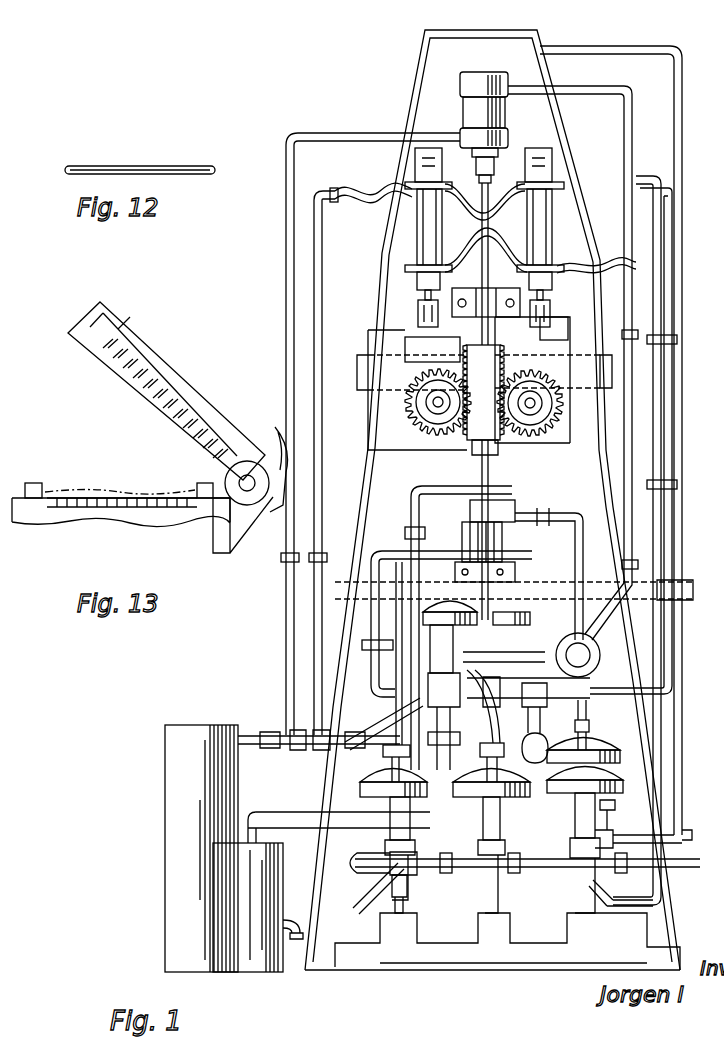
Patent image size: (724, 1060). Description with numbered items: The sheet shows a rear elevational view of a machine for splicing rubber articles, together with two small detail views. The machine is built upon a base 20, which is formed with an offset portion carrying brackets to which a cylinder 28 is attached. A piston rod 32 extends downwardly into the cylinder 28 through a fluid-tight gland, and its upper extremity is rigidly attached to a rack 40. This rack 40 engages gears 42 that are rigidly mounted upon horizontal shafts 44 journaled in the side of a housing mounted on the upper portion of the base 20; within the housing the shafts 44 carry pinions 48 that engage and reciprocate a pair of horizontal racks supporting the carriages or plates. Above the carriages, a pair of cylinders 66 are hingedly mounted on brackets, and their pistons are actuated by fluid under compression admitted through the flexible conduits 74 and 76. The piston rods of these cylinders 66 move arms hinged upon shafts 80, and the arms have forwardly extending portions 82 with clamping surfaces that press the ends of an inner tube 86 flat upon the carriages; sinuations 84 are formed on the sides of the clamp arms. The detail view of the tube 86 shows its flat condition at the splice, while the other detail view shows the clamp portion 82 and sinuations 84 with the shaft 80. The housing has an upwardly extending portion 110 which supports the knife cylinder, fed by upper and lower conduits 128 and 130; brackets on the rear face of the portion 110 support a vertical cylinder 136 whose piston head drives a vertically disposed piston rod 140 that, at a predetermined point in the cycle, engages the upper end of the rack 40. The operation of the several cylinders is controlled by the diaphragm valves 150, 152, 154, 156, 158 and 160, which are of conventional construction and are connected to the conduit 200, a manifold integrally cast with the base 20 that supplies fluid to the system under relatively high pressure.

In FIG. 1, the base 20 is at (330, 781).
In FIG. 1, the cylinder 28 is at (505, 541).
In FIG. 1, the piston rod 32 is at (490, 473).
In FIG. 1, the rack 40 is at (467, 441).
In FIG. 1, the gears 42 is at (428, 430).
In FIG. 1, the horizontal shafts 44 is at (425, 405).
In FIG. 1, the pinions 48 is at (427, 428).
In FIG. 1, the cylinders 66 is at (417, 237).
In FIG. 1, the flexible conduit 74 is at (355, 198).
In FIG. 1, the flexible conduit 76 is at (466, 256).
In FIG. 13, the shafts 80 is at (240, 480).
In FIG. 13, the forwardly extending portions 82 is at (177, 368).
In FIG. 13, the sinuations 84 is at (134, 371).
In FIG. 12, the inner tube 86 is at (190, 167).
In FIG. 1, the upwardly extending portion 110 is at (533, 33).
In FIG. 1, the upper conduit 128 is at (616, 49).
In FIG. 1, the lower conduit 130 is at (641, 176).
In FIG. 1, the vertical cylinder 136 is at (460, 118).
In FIG. 1, the piston rod 140 is at (490, 190).
In FIG. 1, the diaphragm valve 150 is at (455, 614).
In FIG. 1, the diaphragm valve 152 is at (380, 778).
In FIG. 1, the diaphragm valve 154 is at (522, 610).
In FIG. 1, the diaphragm valve 156 is at (481, 770).
In FIG. 1, the diaphragm valve 158 is at (598, 745).
In FIG. 1, the diaphragm valve 160 is at (600, 774).
In FIG. 1, the conduit 200 is at (533, 942).